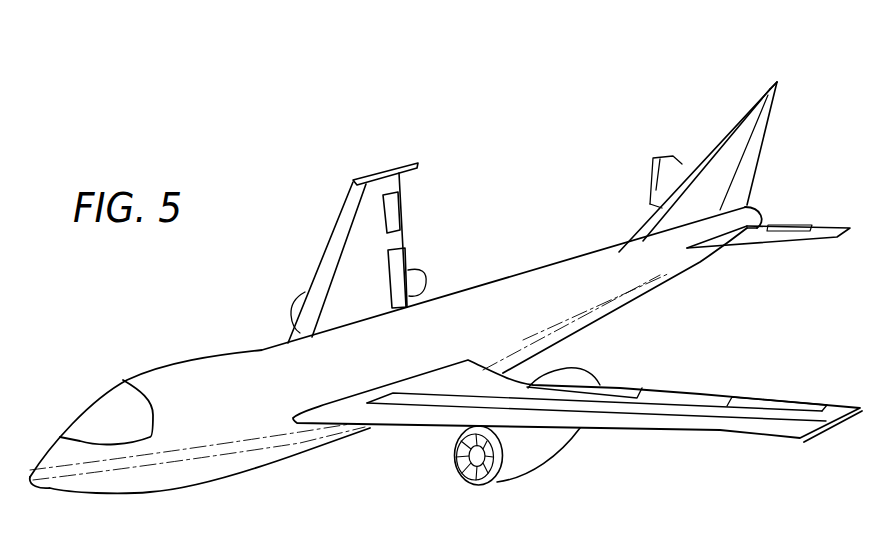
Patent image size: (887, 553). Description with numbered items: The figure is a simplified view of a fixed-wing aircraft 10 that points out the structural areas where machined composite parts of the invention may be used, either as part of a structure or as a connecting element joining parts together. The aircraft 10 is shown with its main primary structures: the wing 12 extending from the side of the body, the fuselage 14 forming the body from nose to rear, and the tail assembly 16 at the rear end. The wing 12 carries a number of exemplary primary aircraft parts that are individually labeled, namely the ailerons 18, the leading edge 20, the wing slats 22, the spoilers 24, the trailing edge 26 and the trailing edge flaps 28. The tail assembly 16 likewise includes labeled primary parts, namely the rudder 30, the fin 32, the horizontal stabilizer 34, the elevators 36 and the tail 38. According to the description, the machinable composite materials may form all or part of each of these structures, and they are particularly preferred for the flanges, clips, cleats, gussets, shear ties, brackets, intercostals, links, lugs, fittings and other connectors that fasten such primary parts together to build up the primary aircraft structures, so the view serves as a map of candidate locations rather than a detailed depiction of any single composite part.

The fixed-wing aircraft 10 is at (457, 276).
The wing 12 is at (667, 403).
The fuselage 14 is at (568, 278).
The tail assembly 16 is at (714, 157).
The ailerons 18 is at (757, 403).
The leading edge 20 is at (350, 223).
The wing slats 22 is at (350, 223).
The spoilers 24 is at (390, 167).
The trailing edge 26 is at (403, 238).
The trailing edge flaps 28 is at (397, 262).
The rudder 30 is at (760, 124).
The fin 32 is at (710, 167).
The horizontal stabilizer 34 is at (785, 238).
The elevators 36 is at (807, 228).
The tail 38 is at (751, 211).